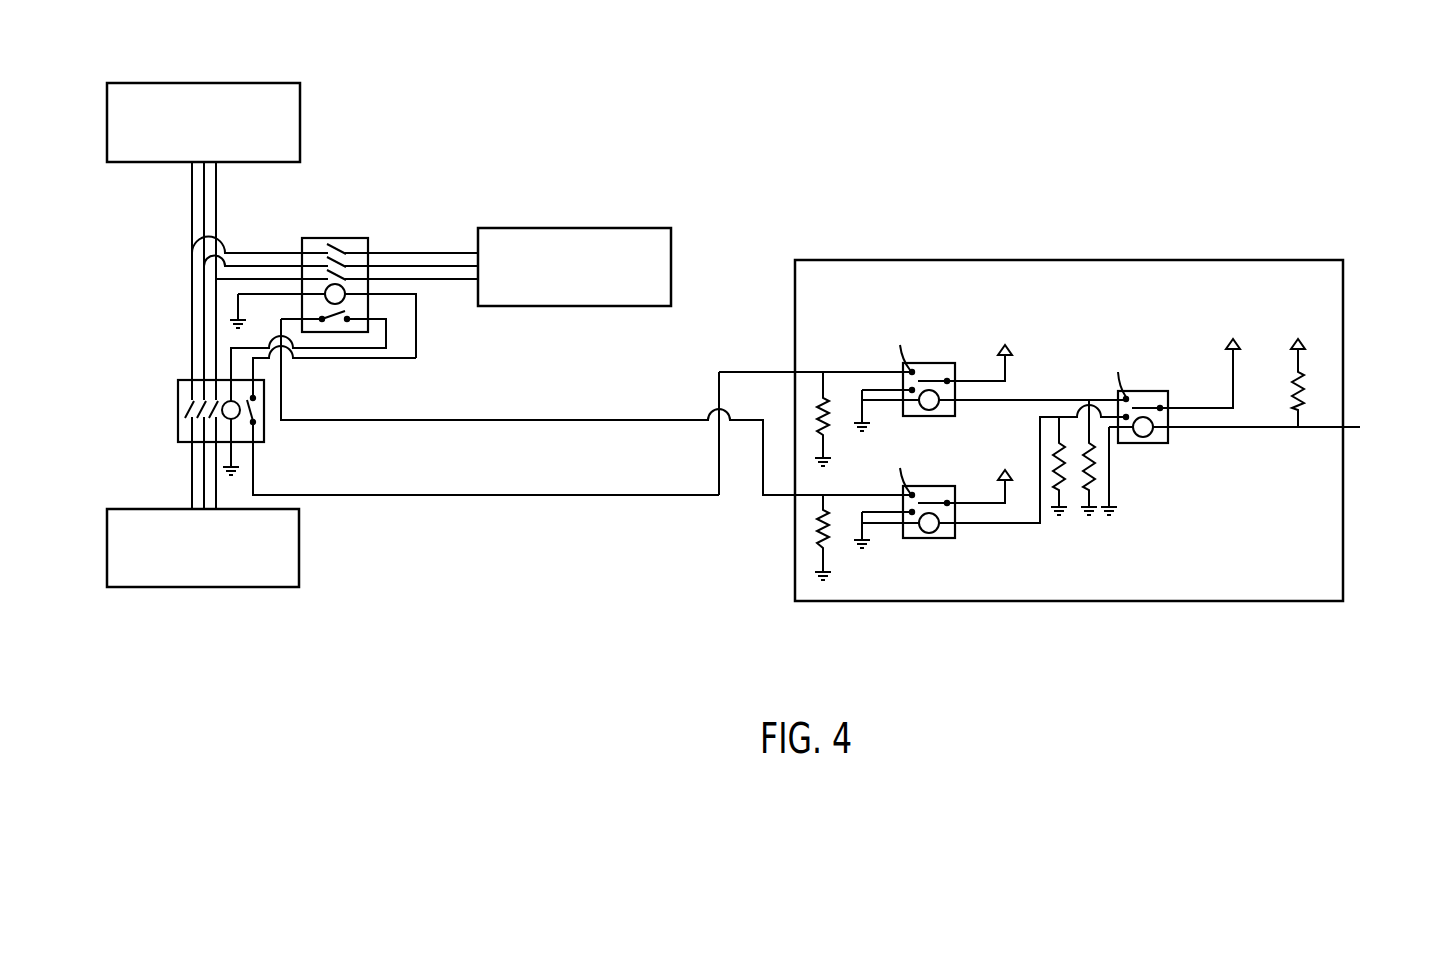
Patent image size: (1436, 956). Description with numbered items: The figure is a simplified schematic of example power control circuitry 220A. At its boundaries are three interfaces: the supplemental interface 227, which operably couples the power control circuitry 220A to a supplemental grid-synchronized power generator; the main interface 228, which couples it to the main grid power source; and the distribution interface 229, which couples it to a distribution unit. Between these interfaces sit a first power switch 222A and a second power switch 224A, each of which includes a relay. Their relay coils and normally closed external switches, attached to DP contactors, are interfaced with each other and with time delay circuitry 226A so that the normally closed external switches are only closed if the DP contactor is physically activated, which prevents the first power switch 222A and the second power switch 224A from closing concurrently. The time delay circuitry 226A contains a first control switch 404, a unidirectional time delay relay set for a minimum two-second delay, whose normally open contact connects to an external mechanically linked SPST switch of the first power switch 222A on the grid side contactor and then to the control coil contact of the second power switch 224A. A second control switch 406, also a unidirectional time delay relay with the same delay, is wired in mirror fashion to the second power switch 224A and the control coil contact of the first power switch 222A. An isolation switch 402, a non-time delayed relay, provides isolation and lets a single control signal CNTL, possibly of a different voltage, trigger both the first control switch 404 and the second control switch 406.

The power control circuitry 220A is at (703, 52).
The supplemental interface 227 is at (141, 83).
The main interface 228 is at (141, 509).
The distribution interface 229 is at (513, 228).
The second power switch 224A is at (350, 238).
The first power switch 222A is at (185, 380).
The time delay circuitry 226A is at (827, 260).
The first control switch 404 is at (950, 363).
The second control switch 406 is at (950, 486).
The isolation switch 402 is at (1165, 391).